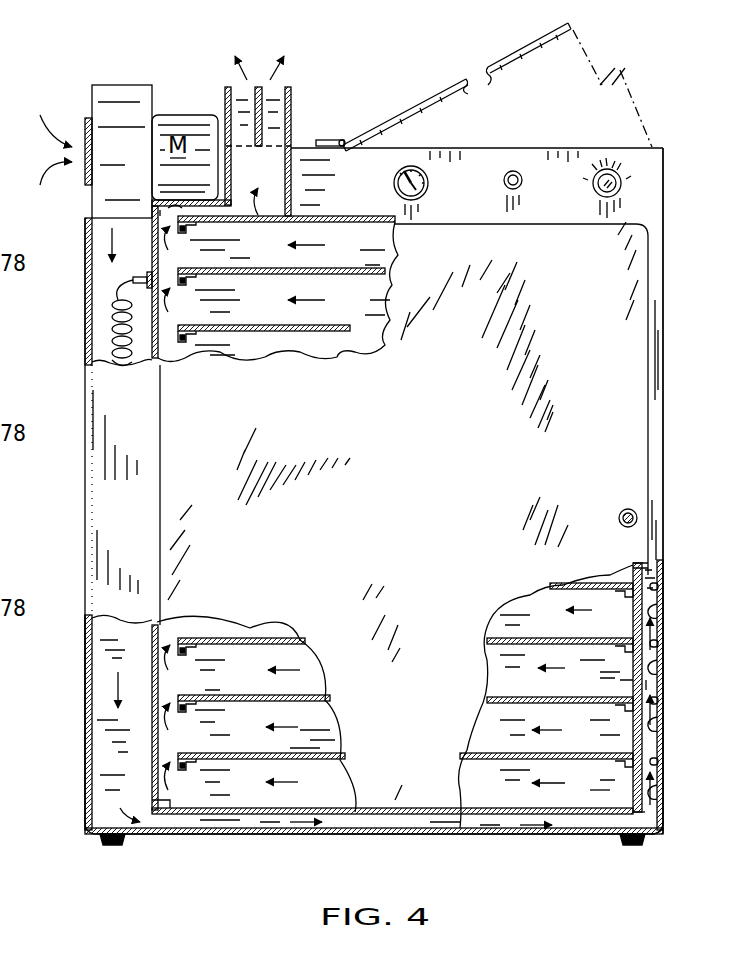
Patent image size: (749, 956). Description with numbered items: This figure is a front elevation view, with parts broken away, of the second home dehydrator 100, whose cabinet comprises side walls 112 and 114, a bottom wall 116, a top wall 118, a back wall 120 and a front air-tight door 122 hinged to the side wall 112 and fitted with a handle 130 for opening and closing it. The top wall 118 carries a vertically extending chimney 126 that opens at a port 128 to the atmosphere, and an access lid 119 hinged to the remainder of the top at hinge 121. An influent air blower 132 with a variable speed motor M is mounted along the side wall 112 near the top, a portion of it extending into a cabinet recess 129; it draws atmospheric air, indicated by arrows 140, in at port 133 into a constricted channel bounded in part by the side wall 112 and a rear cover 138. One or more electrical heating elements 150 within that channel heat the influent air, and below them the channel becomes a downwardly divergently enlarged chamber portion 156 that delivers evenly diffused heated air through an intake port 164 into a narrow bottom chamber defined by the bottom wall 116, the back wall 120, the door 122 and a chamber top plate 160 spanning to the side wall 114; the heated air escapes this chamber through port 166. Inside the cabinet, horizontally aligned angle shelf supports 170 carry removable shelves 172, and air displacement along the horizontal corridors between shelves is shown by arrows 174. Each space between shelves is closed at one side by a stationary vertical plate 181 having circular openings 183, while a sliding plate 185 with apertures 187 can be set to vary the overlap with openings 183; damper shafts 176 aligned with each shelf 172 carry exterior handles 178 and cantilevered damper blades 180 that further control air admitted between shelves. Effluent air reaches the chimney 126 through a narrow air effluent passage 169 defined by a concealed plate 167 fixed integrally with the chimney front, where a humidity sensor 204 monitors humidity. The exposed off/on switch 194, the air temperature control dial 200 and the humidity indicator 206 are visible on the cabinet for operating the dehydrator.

The home dehydrator 100 is at (668, 133).
The side wall 112 is at (147, 716).
The side wall 114 is at (663, 523).
The bottom wall 116 is at (500, 834).
The top wall 118 is at (312, 140).
The access lid 119 is at (443, 83).
The back wall 120 is at (228, 668).
The hinge 121 is at (343, 138).
The front air-tight door 122 is at (468, 475).
The chimney 126 is at (293, 108).
The port 128 is at (200, 198).
The cabinet recess 129 is at (210, 140).
The handle 130 is at (636, 512).
The influent air blower 132 is at (101, 158).
The port 133 is at (86, 128).
The rear cover 138 is at (85, 672).
The arrows 140 is at (45, 190).
The electrical heating element 150 is at (112, 332).
The divergently enlarged chamber portion 156 is at (105, 773).
The chamber top plate 160 is at (280, 810).
The intake port 164 is at (108, 806).
The port 166 is at (658, 830).
The concealed plate 167 is at (305, 212).
The air effluent passage 169 is at (200, 208).
The shelf supports 170 is at (184, 232).
The removable shelves 172 is at (386, 247).
The arrows 174 is at (310, 245).
The damper shaft 176 is at (660, 572).
The exterior handle 178 is at (658, 586).
The damper blades 180 is at (657, 608).
The stationary vertical plate 181 is at (652, 690).
The circular openings 183 is at (650, 810).
The sliding plate 185 is at (648, 683).
The apertures 187 is at (650, 786).
The off/on switch 194 is at (513, 171).
The air temperature control dial 200 is at (621, 183).
The humidity sensor 204 is at (256, 86).
The humidity indicator 206 is at (411, 166).